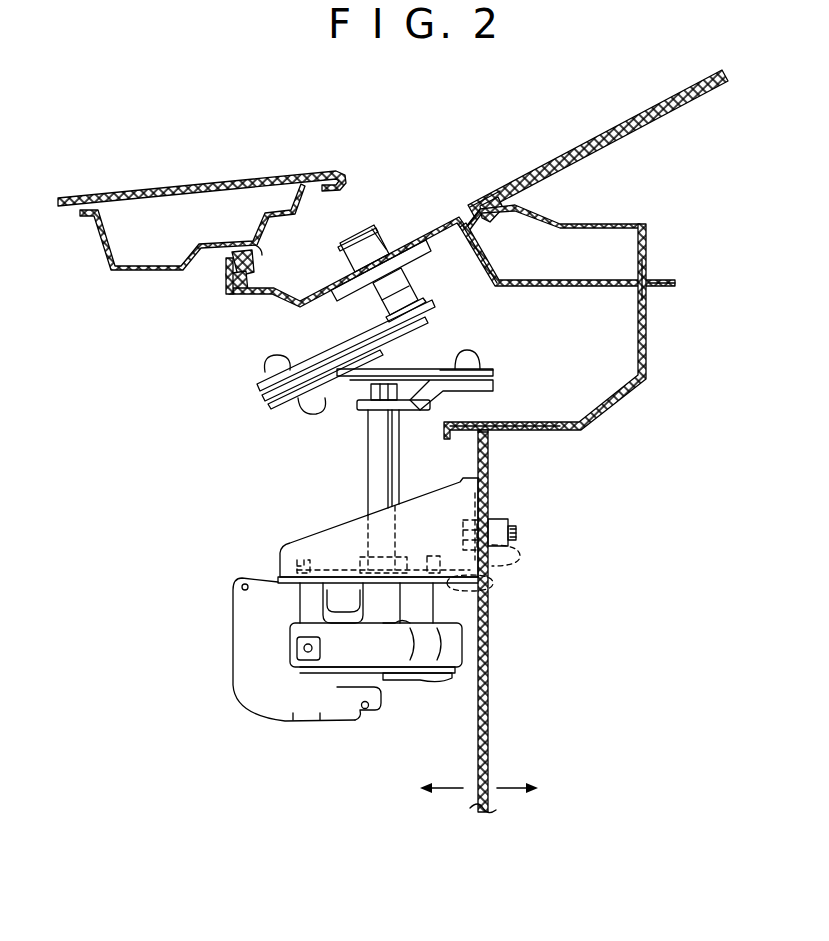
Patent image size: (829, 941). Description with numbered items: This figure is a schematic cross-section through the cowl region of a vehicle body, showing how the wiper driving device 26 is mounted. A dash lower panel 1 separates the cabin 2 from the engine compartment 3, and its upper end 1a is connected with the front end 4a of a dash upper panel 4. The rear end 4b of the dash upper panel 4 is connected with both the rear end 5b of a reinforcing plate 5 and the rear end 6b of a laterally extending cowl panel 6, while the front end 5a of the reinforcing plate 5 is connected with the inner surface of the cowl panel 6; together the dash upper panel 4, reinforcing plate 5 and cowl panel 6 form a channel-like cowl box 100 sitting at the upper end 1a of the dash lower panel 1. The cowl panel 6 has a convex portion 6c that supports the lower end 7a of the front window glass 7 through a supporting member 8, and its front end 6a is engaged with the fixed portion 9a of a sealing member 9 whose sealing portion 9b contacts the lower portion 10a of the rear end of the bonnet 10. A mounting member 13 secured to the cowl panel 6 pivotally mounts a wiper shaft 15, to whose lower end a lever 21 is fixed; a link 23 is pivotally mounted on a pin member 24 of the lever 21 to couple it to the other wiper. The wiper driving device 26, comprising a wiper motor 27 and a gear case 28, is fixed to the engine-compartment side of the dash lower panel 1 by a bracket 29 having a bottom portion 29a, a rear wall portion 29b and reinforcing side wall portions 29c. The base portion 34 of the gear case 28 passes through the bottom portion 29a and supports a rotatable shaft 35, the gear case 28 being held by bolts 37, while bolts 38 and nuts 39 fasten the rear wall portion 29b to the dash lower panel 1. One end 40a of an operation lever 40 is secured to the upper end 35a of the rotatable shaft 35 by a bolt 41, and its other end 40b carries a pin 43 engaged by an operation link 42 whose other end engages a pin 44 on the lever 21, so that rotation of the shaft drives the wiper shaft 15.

The dash lower panel 1 is at (489, 636).
The upper end of dash lower panel 1a is at (489, 445).
The cabin 2 is at (640, 613).
The engine compartment 3 is at (188, 683).
The dash upper panel 4 is at (655, 392).
The front end of dash upper panel 4a is at (470, 422).
The rear end of dash upper panel 4b is at (663, 290).
The reinforcing plate 5 is at (557, 280).
The front end of reinforcing plate 5a is at (437, 240).
The rear end of reinforcing plate 5b is at (678, 283).
The cowl panel 6 is at (415, 235).
The front end of cowl panel 6a is at (232, 293).
The rear end of cowl panel 6b is at (666, 275).
The convex portion of cowl panel 6c is at (475, 205).
The front window glass 7 is at (647, 115).
The lower end of front window glass 7a is at (517, 190).
The supporting member 8 is at (491, 200).
The sealing member 9 is at (257, 253).
The fixed portion of sealing member 9a is at (255, 278).
The sealing portion of sealing member 9b is at (262, 245).
The bonnet 10 is at (265, 176).
The lower portion of rear end of bonnet 10a is at (215, 243).
The mounting member 13 is at (415, 292).
The wiper shaft 15 is at (376, 228).
The lever 21 is at (350, 340).
The link 23 is at (258, 386).
The pin member 24 is at (275, 356).
The wiper driving device 26 is at (232, 618).
The wiper motor 27 is at (268, 690).
The gear case 28 is at (352, 708).
The bracket 29 is at (314, 522).
The bottom portion of bracket 29a is at (495, 583).
The rear wall portion of bracket 29b is at (490, 490).
The side wall portion of bracket 29c is at (345, 530).
The base portion 34 is at (405, 674).
The rotatable shaft 35 is at (368, 450).
The upper end of rotatable shaft 35a is at (396, 445).
The bolt 37 is at (285, 540).
The bolt 38 is at (465, 540).
The nut 39 is at (510, 520).
The operation lever 40 is at (420, 368).
The one end of operation lever 40a is at (325, 370).
The other end of operation lever 40b is at (497, 383).
The bolt 41 is at (388, 384).
The operation link 42 is at (462, 355).
The pin 43 is at (492, 355).
The pin 44 is at (292, 408).
The cowl box 100 is at (612, 336).